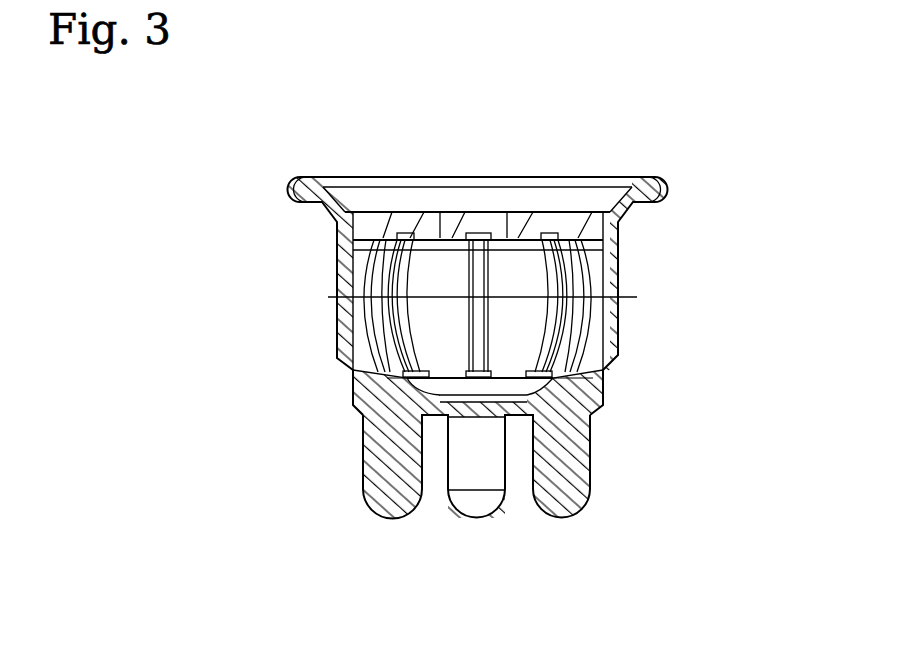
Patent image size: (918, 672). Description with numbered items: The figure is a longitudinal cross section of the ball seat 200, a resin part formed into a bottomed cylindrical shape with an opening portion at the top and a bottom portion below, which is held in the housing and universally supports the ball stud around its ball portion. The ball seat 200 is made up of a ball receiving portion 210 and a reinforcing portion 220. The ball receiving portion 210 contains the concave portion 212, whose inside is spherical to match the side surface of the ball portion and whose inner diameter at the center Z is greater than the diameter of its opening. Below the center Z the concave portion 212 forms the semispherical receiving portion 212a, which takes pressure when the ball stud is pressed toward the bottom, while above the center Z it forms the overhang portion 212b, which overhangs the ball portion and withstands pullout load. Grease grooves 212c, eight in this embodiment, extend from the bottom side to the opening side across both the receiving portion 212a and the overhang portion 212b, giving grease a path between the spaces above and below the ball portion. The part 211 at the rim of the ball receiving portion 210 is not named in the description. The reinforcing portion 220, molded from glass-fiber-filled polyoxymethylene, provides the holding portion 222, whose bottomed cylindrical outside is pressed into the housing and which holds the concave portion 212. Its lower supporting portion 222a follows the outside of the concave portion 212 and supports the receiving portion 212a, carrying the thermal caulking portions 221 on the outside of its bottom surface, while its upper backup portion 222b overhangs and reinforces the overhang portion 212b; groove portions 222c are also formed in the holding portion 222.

The ball seat 200 is at (604, 170).
The ball receiving portion 210 is at (658, 177).
The flange lip 211 is at (289, 193).
The concave portion 212 is at (362, 318).
The receiving portion 212a is at (349, 367).
The overhang portion 212b is at (340, 258).
The grease grooves 212c is at (398, 338).
The reinforcing portion 220 is at (603, 417).
The thermal caulking portions 221 is at (385, 498).
The holding portion 222 is at (624, 252).
The supporting portion 222a is at (600, 353).
The backup portion 222b is at (616, 272).
The groove portions 222c is at (407, 233).